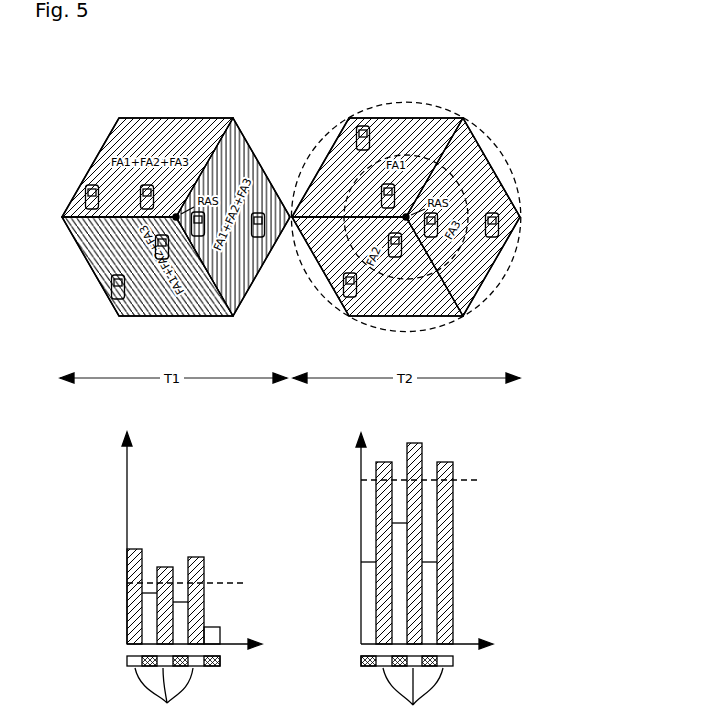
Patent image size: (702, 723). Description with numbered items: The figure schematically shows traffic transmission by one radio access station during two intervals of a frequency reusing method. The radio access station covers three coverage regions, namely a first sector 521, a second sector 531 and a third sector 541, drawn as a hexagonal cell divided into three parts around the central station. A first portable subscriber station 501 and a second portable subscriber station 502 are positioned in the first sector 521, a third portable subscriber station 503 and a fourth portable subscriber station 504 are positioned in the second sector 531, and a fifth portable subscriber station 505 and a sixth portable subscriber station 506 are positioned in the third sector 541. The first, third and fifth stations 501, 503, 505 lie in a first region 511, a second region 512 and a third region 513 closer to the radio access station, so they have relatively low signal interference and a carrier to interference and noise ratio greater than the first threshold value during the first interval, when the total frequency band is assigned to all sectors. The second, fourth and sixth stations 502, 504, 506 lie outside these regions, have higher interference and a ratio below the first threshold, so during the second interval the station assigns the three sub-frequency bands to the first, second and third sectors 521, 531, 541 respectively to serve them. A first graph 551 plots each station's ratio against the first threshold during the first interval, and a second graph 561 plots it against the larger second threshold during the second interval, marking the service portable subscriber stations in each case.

The first portable subscriber station 501 is at (140, 188).
The second portable subscriber station 502 is at (85, 192).
The third portable subscriber station 503 is at (186, 318).
The fourth portable subscriber station 504 is at (111, 292).
The fifth portable subscriber station 505 is at (238, 293).
The sixth portable subscriber station 506 is at (265, 213).
The first region 511 is at (170, 150).
The second region 512 is at (86, 276).
The third region 513 is at (210, 270).
The first sector 521 is at (408, 103).
The second sector 531 is at (333, 303).
The third sector 541 is at (500, 150).
The first graph 551 is at (125, 500).
The second graph 561 is at (361, 490).